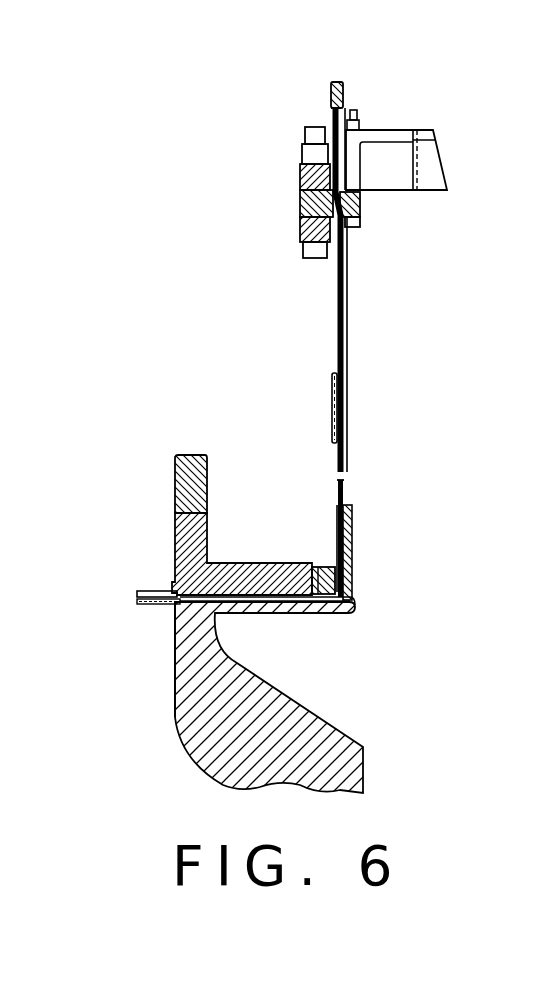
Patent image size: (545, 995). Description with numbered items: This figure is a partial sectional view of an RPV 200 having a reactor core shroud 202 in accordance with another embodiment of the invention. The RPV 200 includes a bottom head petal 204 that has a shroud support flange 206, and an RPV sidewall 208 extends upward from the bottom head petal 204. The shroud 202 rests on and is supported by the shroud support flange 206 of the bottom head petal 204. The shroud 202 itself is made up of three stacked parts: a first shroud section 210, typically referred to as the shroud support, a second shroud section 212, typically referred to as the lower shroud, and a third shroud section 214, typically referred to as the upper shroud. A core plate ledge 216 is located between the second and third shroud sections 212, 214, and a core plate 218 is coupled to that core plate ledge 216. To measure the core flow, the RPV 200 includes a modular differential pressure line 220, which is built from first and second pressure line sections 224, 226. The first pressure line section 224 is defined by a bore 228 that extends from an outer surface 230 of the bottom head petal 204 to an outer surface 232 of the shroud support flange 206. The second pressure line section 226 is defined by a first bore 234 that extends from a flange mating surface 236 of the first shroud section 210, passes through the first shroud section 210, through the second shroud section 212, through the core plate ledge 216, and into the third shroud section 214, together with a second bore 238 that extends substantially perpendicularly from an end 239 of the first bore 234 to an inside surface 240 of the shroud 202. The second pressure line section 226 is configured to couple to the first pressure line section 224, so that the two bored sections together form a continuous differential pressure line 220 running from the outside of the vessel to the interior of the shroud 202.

The RPV 200 is at (195, 169).
The reactor core shroud 202 is at (378, 297).
The bottom head petal 204 is at (180, 760).
The shroud support flange 206 is at (317, 613).
The RPV sidewall 208 is at (175, 482).
The first shroud section 210 is at (350, 527).
The second shroud section 212 is at (347, 357).
The third shroud section 214 is at (330, 92).
The core plate ledge 216 is at (300, 207).
The core plate 218 is at (403, 128).
The modular differential pressure line 220 is at (250, 613).
The first pressure line section 224 is at (223, 592).
The second pressure line section 226 is at (350, 490).
The bore 228 is at (137, 598).
The outer surface 230 is at (175, 680).
The outer surface 232 is at (354, 592).
The first bore 234 is at (352, 540).
The flange mating surface 236 is at (326, 566).
The second bore 238 is at (345, 105).
The end 239 is at (331, 106).
The inside surface 240 is at (343, 83).